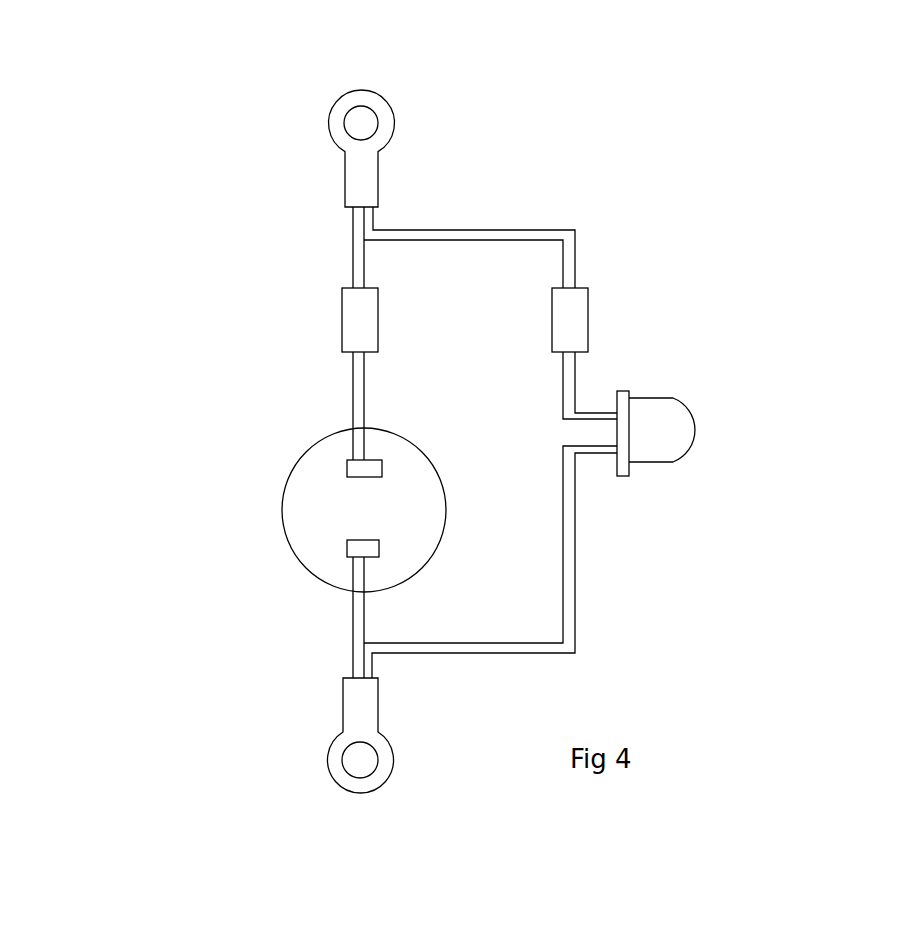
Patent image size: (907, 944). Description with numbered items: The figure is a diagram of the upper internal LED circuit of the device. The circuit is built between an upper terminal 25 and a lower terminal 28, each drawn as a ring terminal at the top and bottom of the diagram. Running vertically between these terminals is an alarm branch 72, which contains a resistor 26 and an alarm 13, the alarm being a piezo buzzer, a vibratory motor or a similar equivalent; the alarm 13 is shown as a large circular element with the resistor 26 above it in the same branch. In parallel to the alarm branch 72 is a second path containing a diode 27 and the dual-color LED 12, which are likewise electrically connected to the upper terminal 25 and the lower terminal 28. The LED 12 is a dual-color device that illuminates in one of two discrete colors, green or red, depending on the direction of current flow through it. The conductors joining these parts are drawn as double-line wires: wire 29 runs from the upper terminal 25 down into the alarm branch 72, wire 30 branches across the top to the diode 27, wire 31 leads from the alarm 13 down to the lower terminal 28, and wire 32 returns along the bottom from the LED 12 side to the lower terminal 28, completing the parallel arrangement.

The dual-color LED 12 is at (697, 431).
The alarm 13 is at (285, 535).
The upper terminal 25 is at (390, 108).
The resistor 26 is at (342, 320).
The diode 27 is at (588, 319).
The lower terminal 28 is at (335, 783).
The first wire 29 is at (353, 248).
The second wire 30 is at (505, 230).
The third wire 31 is at (353, 620).
The fourth wire 32 is at (575, 614).
The alarm branch 72 is at (353, 407).